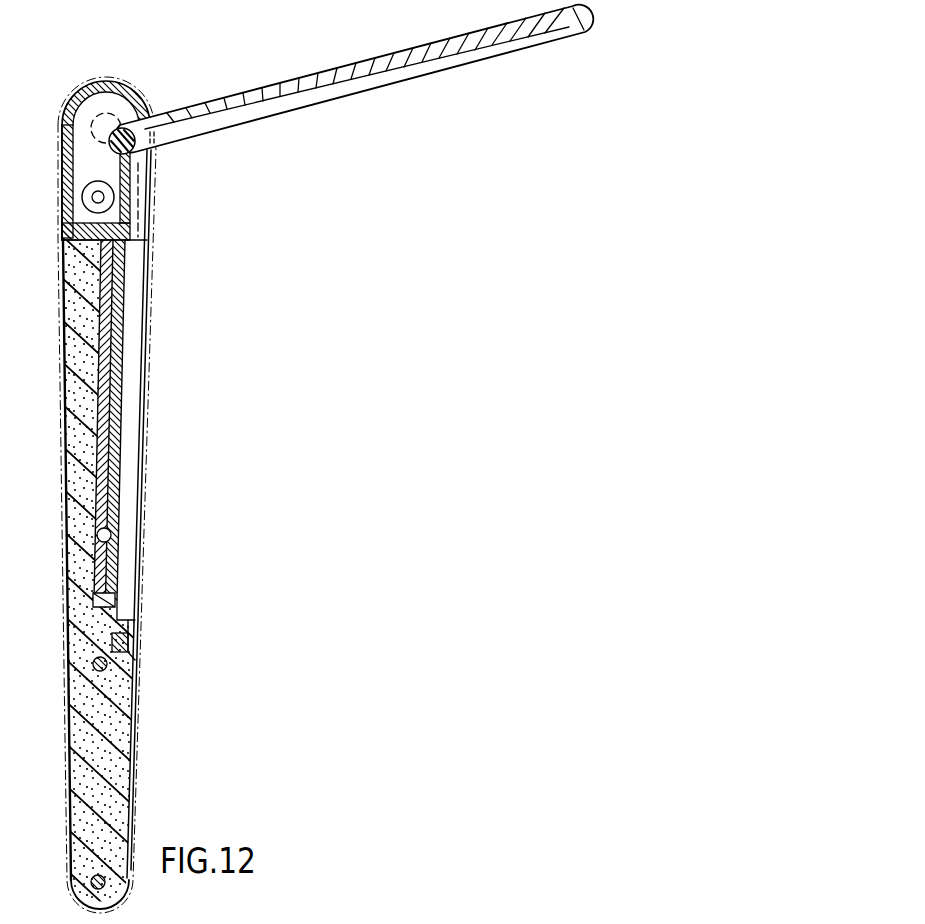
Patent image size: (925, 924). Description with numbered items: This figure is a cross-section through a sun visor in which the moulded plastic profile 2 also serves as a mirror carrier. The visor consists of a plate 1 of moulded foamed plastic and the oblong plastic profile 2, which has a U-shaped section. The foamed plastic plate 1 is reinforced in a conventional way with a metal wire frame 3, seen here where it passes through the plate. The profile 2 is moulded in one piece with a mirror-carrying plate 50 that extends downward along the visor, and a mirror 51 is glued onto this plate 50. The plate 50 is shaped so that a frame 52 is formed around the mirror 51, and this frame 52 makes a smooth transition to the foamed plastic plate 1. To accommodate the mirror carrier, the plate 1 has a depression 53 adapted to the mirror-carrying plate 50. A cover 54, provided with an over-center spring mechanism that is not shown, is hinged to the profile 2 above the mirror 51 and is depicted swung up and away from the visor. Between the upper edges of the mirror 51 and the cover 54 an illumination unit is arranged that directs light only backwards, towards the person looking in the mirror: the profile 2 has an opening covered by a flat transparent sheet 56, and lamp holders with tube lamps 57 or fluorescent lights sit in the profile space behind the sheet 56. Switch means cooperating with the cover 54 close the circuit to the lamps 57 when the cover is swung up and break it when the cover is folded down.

The plate 1 is at (150, 524).
The plastic profile 2 is at (76, 80).
The metal wire frame 3 is at (107, 669).
The mirror-carrying plate 50 is at (101, 375).
The mirror 51 is at (121, 390).
The frame 52 is at (135, 630).
The depression 53 is at (97, 534).
The cover 54 is at (331, 42).
The flat transparent sheet 56 is at (131, 204).
The tube lamps 57 is at (82, 196).